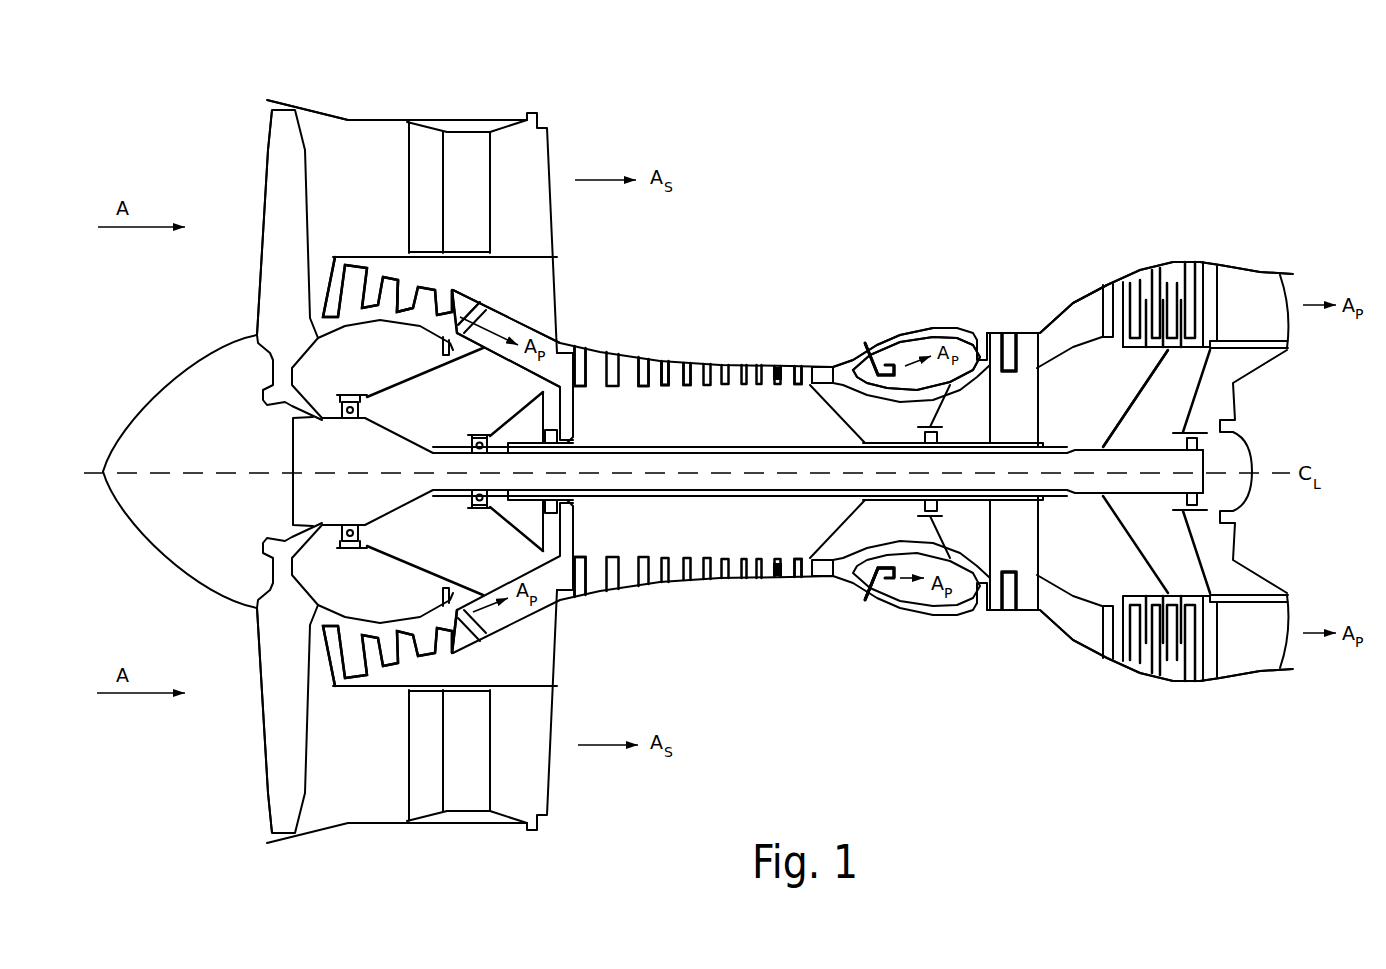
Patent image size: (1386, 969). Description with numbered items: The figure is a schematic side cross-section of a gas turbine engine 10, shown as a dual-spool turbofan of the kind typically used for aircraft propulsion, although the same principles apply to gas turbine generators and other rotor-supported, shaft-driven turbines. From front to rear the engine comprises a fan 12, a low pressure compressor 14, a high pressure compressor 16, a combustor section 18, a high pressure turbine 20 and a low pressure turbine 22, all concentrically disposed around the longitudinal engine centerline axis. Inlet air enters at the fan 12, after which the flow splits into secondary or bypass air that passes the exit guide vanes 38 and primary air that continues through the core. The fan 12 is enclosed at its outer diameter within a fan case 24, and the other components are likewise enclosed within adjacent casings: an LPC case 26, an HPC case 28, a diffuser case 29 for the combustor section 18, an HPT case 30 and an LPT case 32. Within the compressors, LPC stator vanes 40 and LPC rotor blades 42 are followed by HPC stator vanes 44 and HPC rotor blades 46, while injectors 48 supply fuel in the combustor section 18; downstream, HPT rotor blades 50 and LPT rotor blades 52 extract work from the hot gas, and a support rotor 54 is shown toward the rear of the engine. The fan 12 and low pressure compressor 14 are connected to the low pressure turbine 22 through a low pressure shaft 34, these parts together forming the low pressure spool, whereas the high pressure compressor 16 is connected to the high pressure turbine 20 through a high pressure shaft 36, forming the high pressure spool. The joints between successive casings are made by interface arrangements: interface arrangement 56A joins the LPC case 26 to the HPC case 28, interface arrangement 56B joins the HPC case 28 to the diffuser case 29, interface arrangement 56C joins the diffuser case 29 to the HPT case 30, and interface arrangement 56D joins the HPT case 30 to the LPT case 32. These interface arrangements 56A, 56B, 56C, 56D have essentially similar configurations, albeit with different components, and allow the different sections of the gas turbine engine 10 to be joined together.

The gas turbine engine 10 is at (1067, 177).
The fan 12 is at (265, 752).
The low pressure compressor 14 is at (400, 684).
The high pressure compressor 16 is at (740, 600).
The combustor section 18 is at (925, 330).
The high pressure turbine 20 is at (1003, 632).
The low pressure turbine 22 is at (1132, 683).
The fan case 24 is at (377, 120).
The LPC case 26 is at (387, 270).
The HPC case 28 is at (693, 360).
The diffuser case 29 is at (847, 357).
The HPT case 30 is at (1040, 327).
The LPT case 32 is at (1203, 262).
The low pressure shaft 34 is at (788, 463).
The high pressure shaft 36 is at (870, 593).
The exit guide vanes 38 is at (468, 227).
The LPC stator vanes 40 is at (408, 277).
The LPC rotor blades 42 is at (453, 290).
The HPC stator vanes 44 is at (658, 360).
The HPC rotor blades 46 is at (672, 360).
The injectors 48 is at (877, 343).
The HPT rotor blades 50 is at (1030, 613).
The LPT rotor blades 52 is at (1123, 293).
The support rotor 54 is at (1130, 401).
The interface arrangement 56A is at (467, 293).
The interface arrangement 56B is at (825, 360).
The interface arrangement 56C is at (1005, 335).
The interface arrangement 56D is at (1050, 315).